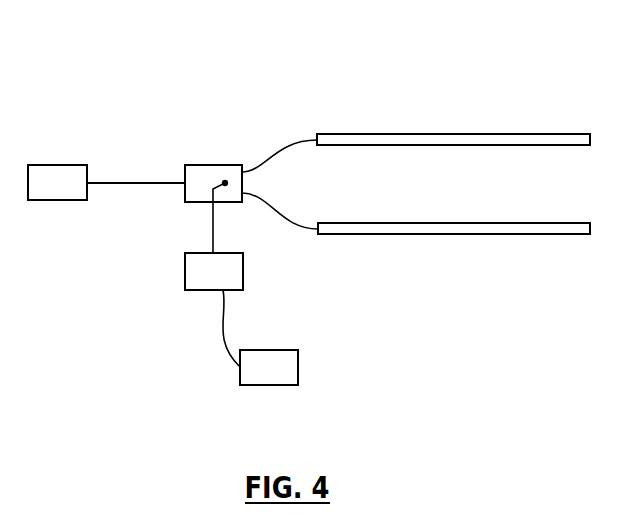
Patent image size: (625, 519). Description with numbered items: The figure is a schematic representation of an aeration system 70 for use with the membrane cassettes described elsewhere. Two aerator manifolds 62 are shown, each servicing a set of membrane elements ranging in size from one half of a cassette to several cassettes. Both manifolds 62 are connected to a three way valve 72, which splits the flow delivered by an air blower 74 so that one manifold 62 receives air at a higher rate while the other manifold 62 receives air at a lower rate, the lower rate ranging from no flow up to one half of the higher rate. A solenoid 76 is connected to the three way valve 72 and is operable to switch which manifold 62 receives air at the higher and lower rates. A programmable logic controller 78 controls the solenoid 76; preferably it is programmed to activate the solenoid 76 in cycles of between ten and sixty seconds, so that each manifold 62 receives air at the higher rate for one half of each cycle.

The aerator manifold 62 is at (508, 134).
The aeration system 70 is at (98, 315).
The three way valve 72 is at (212, 172).
The air blower 74 is at (58, 172).
The solenoid 76 is at (232, 272).
The programmable logic controller 78 is at (288, 367).